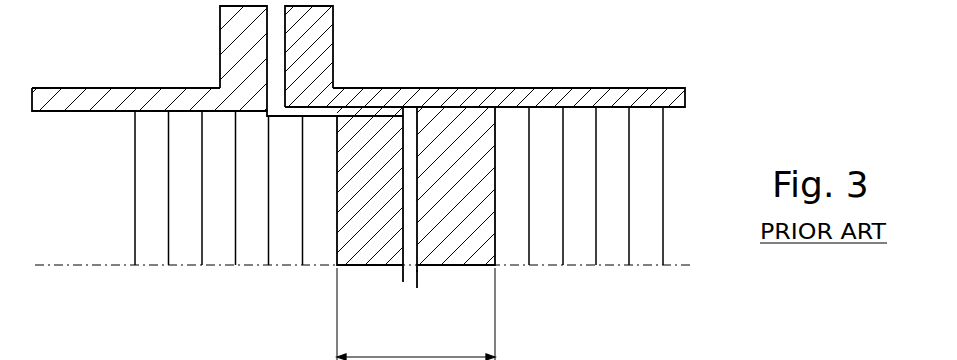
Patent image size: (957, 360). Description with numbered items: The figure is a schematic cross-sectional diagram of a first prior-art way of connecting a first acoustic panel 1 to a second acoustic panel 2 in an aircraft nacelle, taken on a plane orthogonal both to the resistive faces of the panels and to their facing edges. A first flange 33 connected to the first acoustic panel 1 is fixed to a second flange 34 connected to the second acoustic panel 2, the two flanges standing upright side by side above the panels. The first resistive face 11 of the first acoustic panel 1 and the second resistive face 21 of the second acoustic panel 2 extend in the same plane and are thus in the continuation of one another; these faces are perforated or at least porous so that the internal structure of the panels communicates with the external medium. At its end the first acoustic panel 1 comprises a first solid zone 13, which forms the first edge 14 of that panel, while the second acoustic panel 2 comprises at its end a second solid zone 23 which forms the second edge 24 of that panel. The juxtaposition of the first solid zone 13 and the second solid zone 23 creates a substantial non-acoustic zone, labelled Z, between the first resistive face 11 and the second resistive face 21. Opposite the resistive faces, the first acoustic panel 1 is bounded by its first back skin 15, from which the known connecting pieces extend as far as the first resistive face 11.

The first acoustic panel 1 is at (117, 255).
The first resistive face 11 is at (232, 265).
The first solid zone 13 is at (358, 260).
The first edge 14 is at (403, 270).
The first back skin 15 is at (369, 314).
The second acoustic panel 2 is at (652, 247).
The second resistive face 21 is at (572, 268).
The second solid zone 23 is at (465, 253).
The second edge 24 is at (417, 288).
The first flange 33 is at (230, 38).
The second flange 34 is at (320, 25).